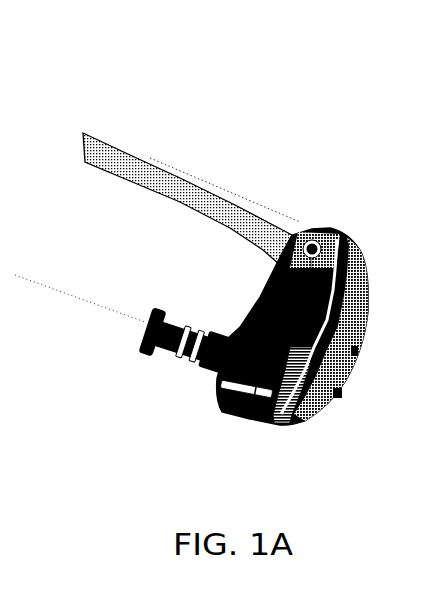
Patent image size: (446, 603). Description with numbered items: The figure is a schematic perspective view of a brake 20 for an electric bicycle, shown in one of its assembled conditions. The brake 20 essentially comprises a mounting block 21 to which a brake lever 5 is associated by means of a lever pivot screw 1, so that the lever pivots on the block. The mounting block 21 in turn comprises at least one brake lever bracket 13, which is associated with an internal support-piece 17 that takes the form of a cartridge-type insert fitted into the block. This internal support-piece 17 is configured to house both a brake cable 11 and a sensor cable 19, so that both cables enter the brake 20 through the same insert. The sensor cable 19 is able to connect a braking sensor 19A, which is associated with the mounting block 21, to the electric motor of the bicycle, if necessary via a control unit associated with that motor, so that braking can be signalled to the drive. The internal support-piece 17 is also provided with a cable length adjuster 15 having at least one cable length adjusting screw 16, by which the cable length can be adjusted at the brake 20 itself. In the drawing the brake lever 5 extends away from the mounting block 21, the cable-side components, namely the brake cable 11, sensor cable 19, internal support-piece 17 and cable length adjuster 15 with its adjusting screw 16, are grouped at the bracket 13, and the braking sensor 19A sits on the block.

The brake 20 is at (283, 173).
The brake lever 5 is at (162, 160).
The lever pivot screw 1 is at (317, 243).
The mounting block 21 is at (333, 253).
The sensor cable 19 is at (92, 292).
The brake cable 11 is at (137, 327).
The internal support-piece 17 is at (142, 327).
The brake lever bracket 13 is at (213, 380).
The braking sensor 19A is at (220, 410).
The cable length adjuster 15 is at (264, 422).
The cable length adjusting screw 16 is at (337, 397).